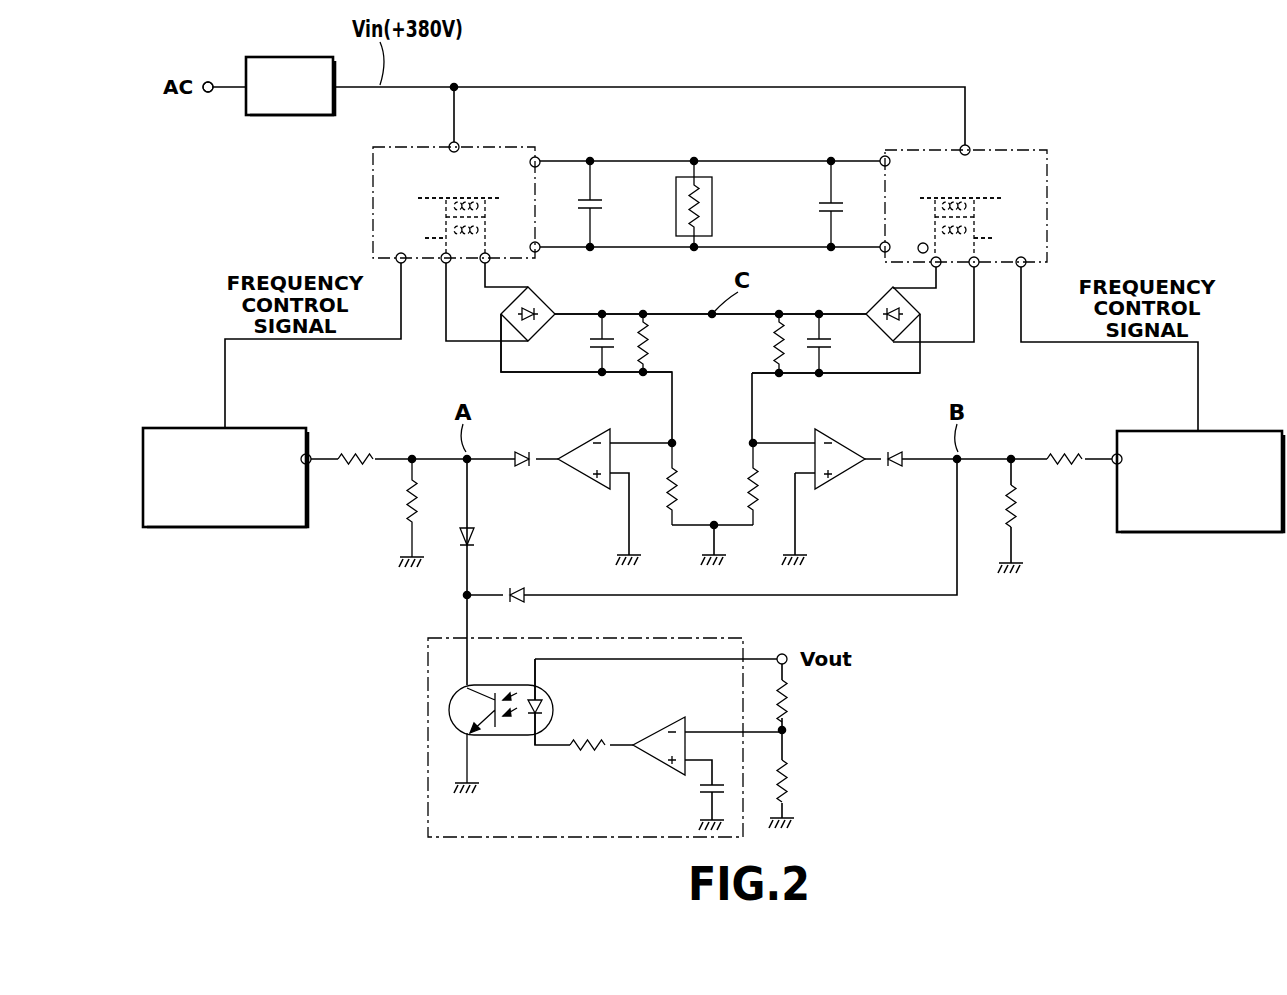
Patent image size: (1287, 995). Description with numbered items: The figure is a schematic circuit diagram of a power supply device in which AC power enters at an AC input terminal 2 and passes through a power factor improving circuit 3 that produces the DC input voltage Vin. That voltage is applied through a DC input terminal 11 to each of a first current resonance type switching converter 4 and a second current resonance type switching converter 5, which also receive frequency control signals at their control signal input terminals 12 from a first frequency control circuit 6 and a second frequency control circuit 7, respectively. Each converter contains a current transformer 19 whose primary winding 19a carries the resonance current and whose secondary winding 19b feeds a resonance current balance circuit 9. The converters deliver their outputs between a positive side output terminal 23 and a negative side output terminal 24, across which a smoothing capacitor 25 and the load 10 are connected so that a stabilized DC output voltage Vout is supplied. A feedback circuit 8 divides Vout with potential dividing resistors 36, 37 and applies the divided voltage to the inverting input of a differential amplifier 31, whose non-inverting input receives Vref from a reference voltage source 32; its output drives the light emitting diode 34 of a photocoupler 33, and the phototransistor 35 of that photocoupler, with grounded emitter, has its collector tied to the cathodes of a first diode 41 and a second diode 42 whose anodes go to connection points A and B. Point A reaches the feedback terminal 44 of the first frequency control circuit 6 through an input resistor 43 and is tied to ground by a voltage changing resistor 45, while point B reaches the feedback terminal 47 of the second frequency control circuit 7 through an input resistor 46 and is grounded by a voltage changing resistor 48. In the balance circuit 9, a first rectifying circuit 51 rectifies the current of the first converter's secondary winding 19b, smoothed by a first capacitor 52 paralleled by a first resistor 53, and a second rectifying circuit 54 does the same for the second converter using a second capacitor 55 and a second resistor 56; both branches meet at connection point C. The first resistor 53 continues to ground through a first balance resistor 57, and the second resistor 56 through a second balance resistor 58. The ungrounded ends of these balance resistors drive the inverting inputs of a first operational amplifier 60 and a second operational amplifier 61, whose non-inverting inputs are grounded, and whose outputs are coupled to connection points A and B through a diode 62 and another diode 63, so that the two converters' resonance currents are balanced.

The AC input terminal 2 is at (208, 93).
The power factor improving circuit 3 is at (297, 116).
The first current resonance type switching converter 4 is at (373, 185).
The second current resonance type switching converter 5 is at (1048, 180).
The first frequency control circuit 6 is at (193, 425).
The second frequency control circuit 7 is at (1245, 430).
The feedback circuit 8 is at (427, 770).
The resonance current balance circuit 9 is at (626, 314).
The load 10 is at (713, 200).
The DC input terminal 11 is at (459, 143).
The control signal input terminal 12 is at (396, 259).
The current transformer 19 is at (445, 186).
The primary winding of current transformer 19a is at (465, 197).
The secondary winding of current transformer 19b is at (446, 240).
The positive side output terminal 23 is at (540, 159).
The negative side output terminal 24 is at (540, 252).
The smoothing capacitor 25 is at (604, 212).
The differential amplifier 31 is at (655, 730).
The reference voltage source 32 is at (700, 790).
The photocoupler 33 is at (516, 740).
The light emitting diode 34 is at (546, 700).
The phototransistor 35 is at (456, 708).
The potential dividing resistor 36 is at (790, 709).
The potential dividing resistor 37 is at (792, 785).
The first diode 41 is at (476, 528).
The second diode 42 is at (524, 588).
The input resistor 43 is at (358, 455).
The feedback terminal 44 is at (309, 453).
The voltage changing resistor 45 is at (407, 500).
The input resistor 46 is at (1062, 453).
The feedback terminal 47 is at (1113, 455).
The voltage changing resistor 48 is at (1020, 505).
The first rectifying circuit 51 is at (506, 306).
The first capacitor 52 is at (590, 343).
The first resistor 53 is at (650, 345).
The second rectifying circuit 54 is at (916, 305).
The second capacitor 55 is at (832, 343).
The second resistor 56 is at (770, 348).
The first balance resistor 57 is at (676, 470).
The second balance resistor 58 is at (749, 482).
The first operational amplifier 60 is at (585, 437).
The second operational amplifier 61 is at (829, 437).
The diode 62 is at (524, 448).
The diode 63 is at (893, 448).